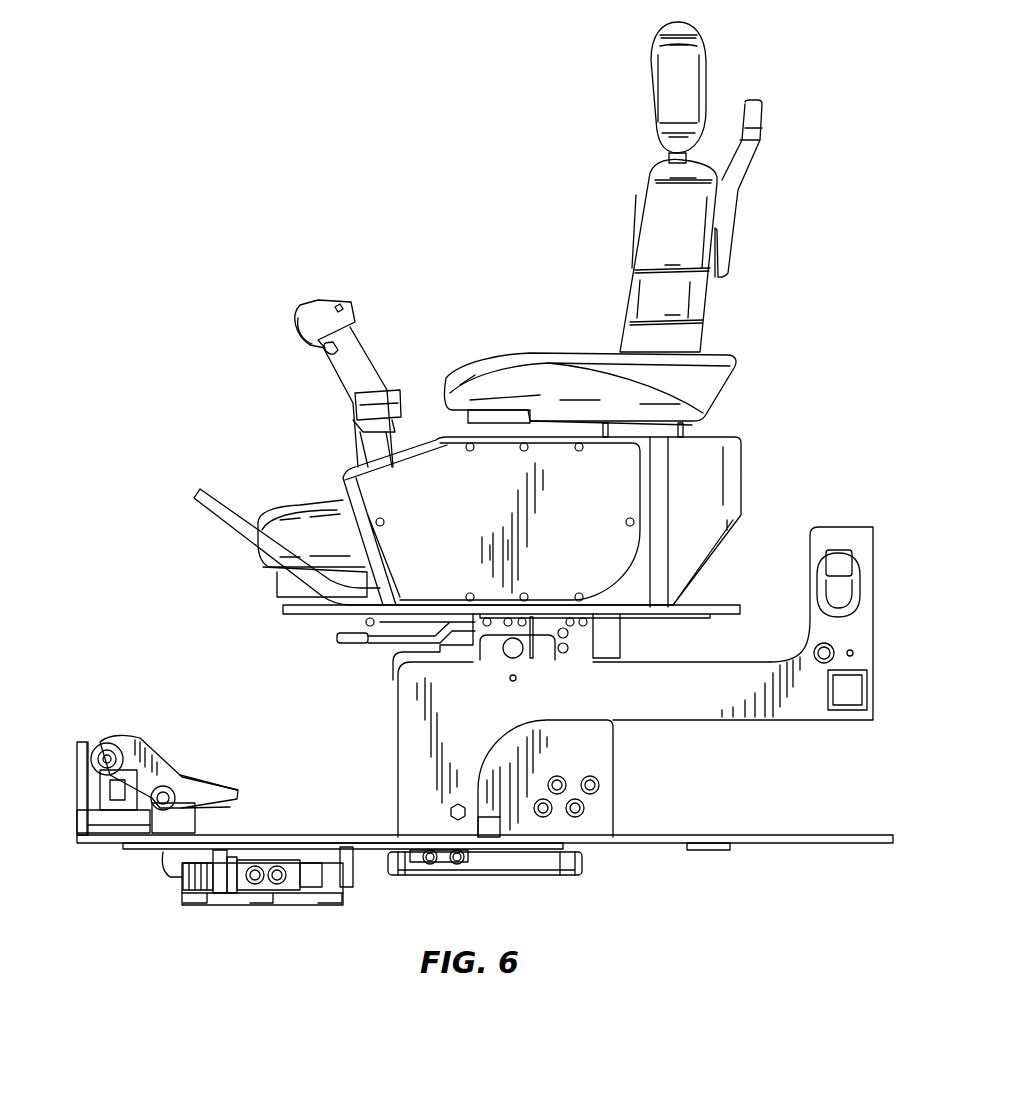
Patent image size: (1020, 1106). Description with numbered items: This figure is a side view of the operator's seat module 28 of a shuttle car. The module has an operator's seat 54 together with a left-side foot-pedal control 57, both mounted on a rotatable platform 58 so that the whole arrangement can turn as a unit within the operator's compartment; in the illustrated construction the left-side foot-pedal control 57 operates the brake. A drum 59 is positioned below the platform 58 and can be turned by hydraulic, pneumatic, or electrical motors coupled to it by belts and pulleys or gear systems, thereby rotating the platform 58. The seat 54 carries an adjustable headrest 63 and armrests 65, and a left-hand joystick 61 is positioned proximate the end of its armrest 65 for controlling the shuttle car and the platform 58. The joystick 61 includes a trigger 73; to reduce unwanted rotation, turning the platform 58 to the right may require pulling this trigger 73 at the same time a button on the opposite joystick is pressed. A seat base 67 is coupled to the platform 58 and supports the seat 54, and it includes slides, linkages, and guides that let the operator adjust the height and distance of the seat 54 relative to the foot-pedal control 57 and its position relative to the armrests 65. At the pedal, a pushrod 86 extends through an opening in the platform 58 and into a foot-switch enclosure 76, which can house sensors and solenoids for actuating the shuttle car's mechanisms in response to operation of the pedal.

The operator's seat module 28 is at (399, 178).
The adjustable headrest 63 is at (665, 88).
The operator's seat 54 is at (632, 283).
The armrests 65 is at (543, 345).
The left-hand joystick 61 is at (360, 318).
The trigger 73 is at (325, 347).
The seat base 67 is at (398, 698).
The rotatable platform 58 is at (828, 835).
The left-side foot-pedal control 57 is at (195, 783).
The pushrod 86 is at (162, 815).
The foot-switch enclosure 76 is at (240, 893).
The drum 59 is at (565, 875).